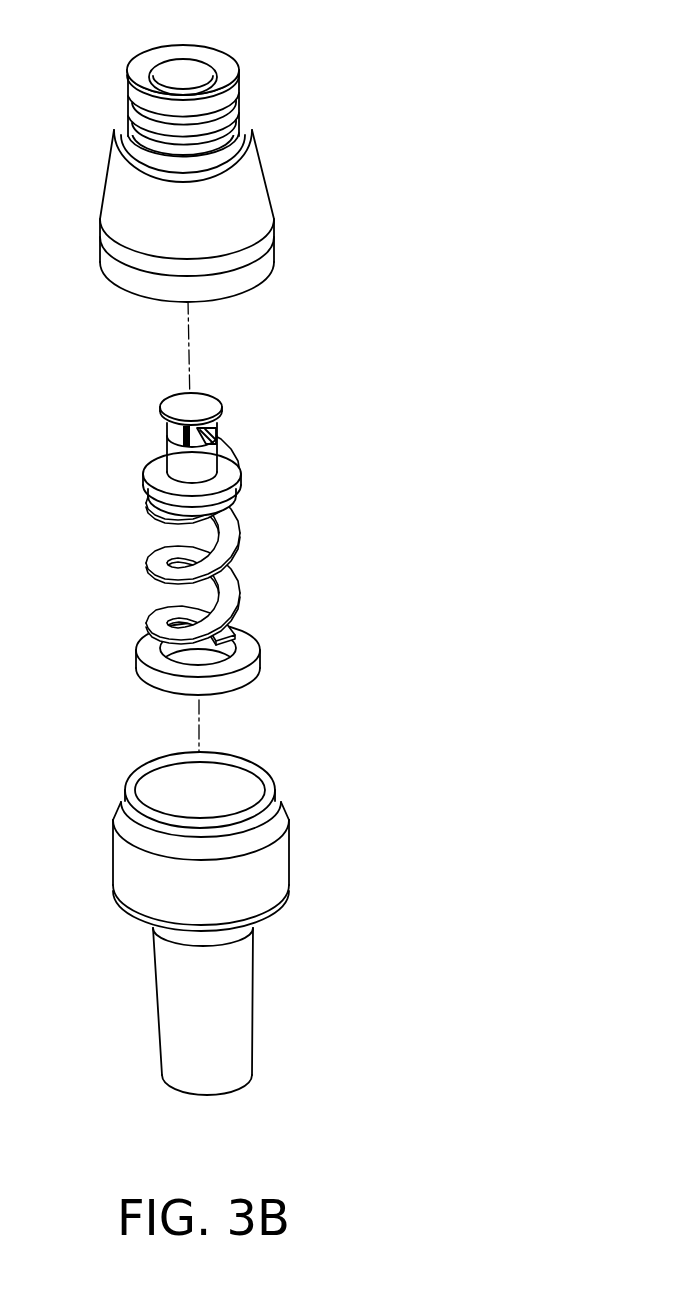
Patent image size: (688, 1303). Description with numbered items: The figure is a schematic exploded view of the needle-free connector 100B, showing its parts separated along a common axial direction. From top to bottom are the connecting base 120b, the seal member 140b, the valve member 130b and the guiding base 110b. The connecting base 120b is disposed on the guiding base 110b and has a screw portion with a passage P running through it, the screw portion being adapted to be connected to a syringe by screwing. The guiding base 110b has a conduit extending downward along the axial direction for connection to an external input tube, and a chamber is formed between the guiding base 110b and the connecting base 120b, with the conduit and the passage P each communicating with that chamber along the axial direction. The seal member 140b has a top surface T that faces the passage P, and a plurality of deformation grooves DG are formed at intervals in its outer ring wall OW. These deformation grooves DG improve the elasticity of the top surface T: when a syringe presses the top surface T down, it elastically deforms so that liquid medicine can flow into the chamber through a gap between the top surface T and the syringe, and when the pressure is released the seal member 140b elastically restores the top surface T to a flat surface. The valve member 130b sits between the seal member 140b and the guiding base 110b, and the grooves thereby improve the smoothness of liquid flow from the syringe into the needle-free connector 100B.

The needle-free connector 100B is at (477, 1135).
The guiding base 110b is at (273, 860).
The connecting base 120b is at (252, 184).
The valve member 130b is at (253, 528).
The seal member 140b is at (160, 467).
The passage P is at (193, 78).
The top surface T is at (202, 403).
The deformation grooves DG is at (198, 431).
The outer ring wall OW is at (202, 466).